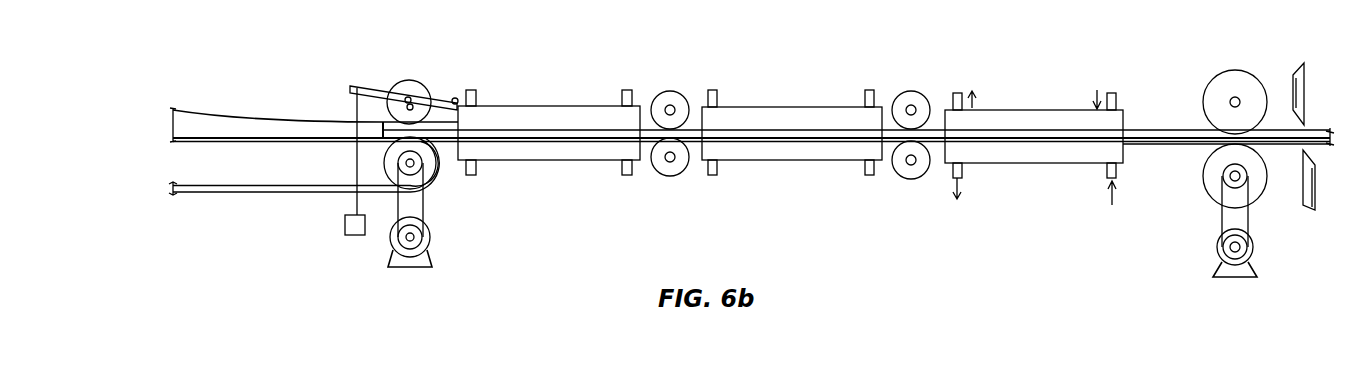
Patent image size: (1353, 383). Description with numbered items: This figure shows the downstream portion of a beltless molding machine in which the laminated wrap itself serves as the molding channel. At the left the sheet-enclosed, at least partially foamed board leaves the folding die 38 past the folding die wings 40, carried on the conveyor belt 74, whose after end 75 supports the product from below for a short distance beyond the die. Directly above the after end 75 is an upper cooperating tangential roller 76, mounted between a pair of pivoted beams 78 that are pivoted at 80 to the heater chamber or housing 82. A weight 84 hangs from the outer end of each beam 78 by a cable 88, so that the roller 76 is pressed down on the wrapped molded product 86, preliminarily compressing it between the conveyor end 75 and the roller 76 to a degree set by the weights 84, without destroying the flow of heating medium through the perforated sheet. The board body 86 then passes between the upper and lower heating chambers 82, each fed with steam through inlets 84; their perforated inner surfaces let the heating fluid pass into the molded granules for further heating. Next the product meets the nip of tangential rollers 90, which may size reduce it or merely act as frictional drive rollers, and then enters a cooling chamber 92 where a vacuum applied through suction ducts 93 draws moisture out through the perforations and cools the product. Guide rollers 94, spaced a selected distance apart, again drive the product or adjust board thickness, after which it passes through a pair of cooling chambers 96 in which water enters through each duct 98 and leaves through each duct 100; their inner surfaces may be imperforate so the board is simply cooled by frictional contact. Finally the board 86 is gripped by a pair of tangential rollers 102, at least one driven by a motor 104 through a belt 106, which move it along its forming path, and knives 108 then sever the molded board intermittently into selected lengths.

The folding die 38 is at (209, 104).
The folding die wings 40 is at (275, 118).
The conveyor belt 74 is at (228, 191).
The after end of conveyor belt 75 is at (433, 173).
The upper cooperating tangential roller 76 is at (413, 80).
The pivoted beams 78 is at (360, 84).
The pivot 80 is at (455, 98).
The heating chamber 82 is at (551, 148).
The weight 84 is at (345, 220).
The wrapped molded product 86 is at (432, 130).
The cable 88 is at (357, 170).
The tangential rollers 90 is at (672, 91).
The cooling chamber 92 is at (843, 152).
The suction ducts 93 is at (715, 90).
The guide rollers 94 is at (915, 92).
The cooling chambers 96 is at (1062, 157).
The duct 98 is at (1113, 93).
The duct 100 is at (961, 93).
The tangential rollers 102 is at (1205, 103).
The motor 104 is at (1218, 252).
The belt 106 is at (1222, 220).
The knives 108 is at (1293, 82).